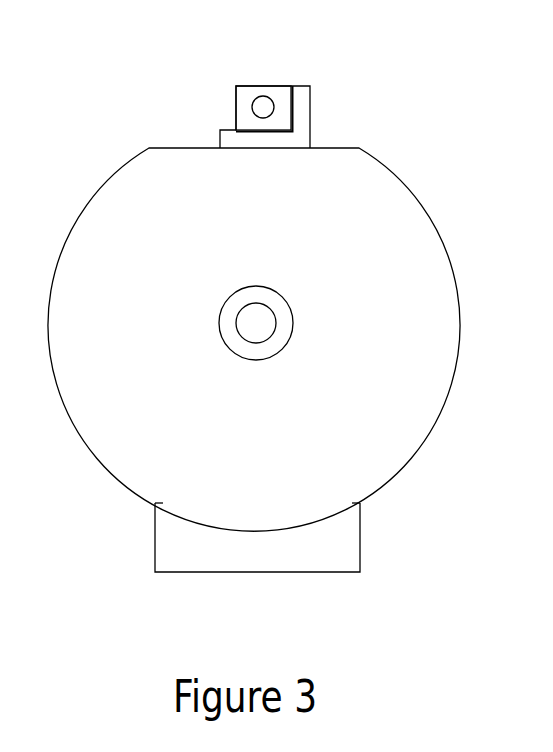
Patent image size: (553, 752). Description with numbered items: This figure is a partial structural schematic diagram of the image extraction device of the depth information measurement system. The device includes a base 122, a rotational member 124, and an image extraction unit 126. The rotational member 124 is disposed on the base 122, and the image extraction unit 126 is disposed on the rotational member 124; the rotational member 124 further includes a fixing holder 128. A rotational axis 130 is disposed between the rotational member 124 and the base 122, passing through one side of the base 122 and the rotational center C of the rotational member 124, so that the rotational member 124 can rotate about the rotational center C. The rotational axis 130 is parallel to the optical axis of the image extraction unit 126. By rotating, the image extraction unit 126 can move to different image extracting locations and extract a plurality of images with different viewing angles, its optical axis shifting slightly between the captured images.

The base 122 is at (360, 547).
The rotational member 124 is at (408, 188).
The image extraction unit 126 is at (268, 86).
The fixing holder 128 is at (220, 130).
The rotational axis 130 is at (258, 303).
The rotational center C is at (222, 283).